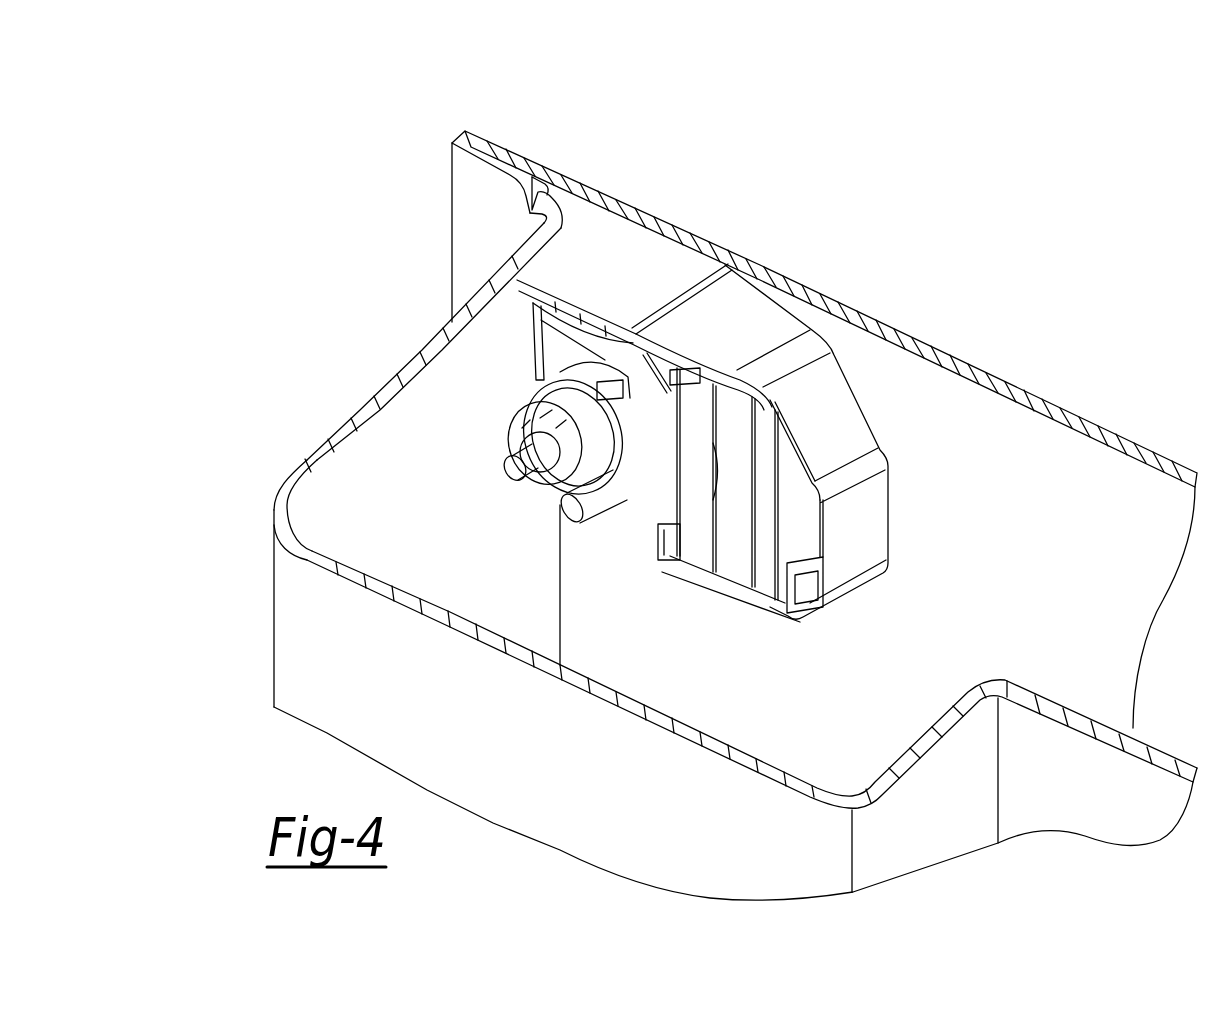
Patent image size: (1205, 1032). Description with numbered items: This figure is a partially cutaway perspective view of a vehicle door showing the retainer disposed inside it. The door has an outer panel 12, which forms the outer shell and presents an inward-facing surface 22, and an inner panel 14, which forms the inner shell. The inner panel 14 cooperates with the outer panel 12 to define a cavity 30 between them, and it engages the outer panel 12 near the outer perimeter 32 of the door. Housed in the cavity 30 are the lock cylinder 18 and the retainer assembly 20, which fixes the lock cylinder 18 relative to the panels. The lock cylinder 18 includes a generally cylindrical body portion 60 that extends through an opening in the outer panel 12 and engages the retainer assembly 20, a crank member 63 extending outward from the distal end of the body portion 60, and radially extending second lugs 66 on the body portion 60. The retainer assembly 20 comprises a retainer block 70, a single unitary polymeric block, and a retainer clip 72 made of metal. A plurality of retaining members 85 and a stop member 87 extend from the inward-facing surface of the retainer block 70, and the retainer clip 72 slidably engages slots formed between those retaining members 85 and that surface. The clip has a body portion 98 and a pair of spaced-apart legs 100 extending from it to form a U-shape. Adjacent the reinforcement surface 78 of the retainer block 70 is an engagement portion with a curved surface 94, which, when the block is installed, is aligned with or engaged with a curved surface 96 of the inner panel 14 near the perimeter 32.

The outer panel 12 is at (1062, 410).
The inner panel 14 is at (275, 622).
The lock cylinder 18 is at (513, 408).
The retainer assembly 20 is at (847, 598).
The inward-facing surface 22 is at (1063, 503).
The cavity 30 is at (350, 513).
The outer perimeter 32 is at (470, 130).
The body portion 60 is at (622, 408).
The crank member 63 is at (570, 509).
The second lugs 66 is at (600, 370).
The retainer block 70 is at (838, 370).
The retainer clip 72 is at (688, 435).
The reinforcement surface 78 is at (671, 283).
The retaining members 85 is at (700, 357).
The stop member 87 is at (780, 597).
The curved surface 94 is at (547, 213).
The curved surface 96 is at (548, 188).
The body portion 98 is at (667, 503).
The legs 100 is at (548, 330).